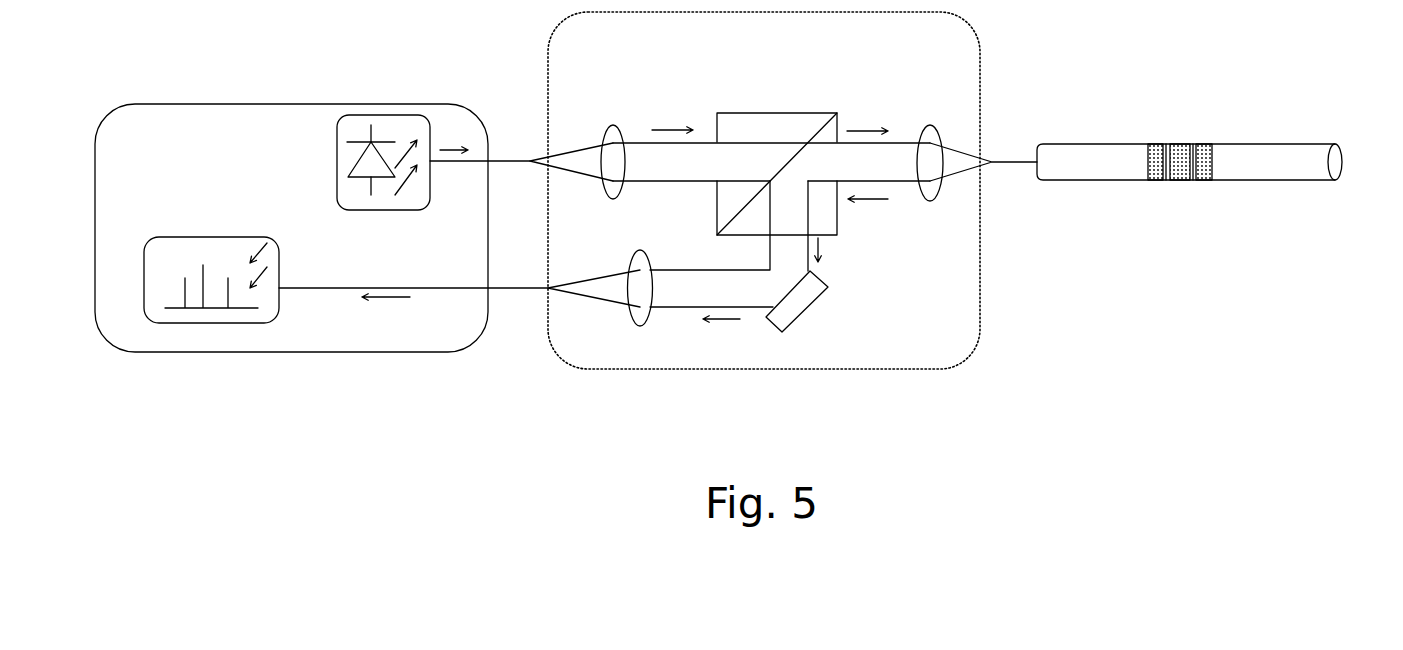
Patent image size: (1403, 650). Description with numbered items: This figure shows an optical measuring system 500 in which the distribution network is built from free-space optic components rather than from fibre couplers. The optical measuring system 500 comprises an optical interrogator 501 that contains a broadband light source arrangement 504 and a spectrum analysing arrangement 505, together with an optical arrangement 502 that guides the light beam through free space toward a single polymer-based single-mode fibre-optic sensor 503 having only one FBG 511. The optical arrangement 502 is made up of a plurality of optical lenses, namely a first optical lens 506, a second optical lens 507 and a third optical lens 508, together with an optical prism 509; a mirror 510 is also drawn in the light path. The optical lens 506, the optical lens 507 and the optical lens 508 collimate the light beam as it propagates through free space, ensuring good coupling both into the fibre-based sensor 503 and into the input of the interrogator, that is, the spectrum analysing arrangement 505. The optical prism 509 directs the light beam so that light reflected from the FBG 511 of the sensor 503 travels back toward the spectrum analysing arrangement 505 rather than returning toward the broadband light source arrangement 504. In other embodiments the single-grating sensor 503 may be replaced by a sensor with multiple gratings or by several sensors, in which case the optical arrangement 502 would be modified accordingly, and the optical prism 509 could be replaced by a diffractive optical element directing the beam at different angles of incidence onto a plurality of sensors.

The optical measuring system 500 is at (158, 53).
The optical interrogator 501 is at (162, 141).
The optical arrangement 502 is at (625, 54).
The polymer-based single-mode fibre-optic sensor 503 is at (1265, 158).
The broadband light source arrangement 504 is at (394, 132).
The spectrum analysing arrangement 505 is at (263, 309).
The optical lens 506 is at (640, 317).
The optical lens 507 is at (612, 135).
The optical lens 508 is at (930, 133).
The optical prism 509 is at (807, 135).
The mirror 510 is at (797, 295).
The FBG 511 is at (1180, 192).